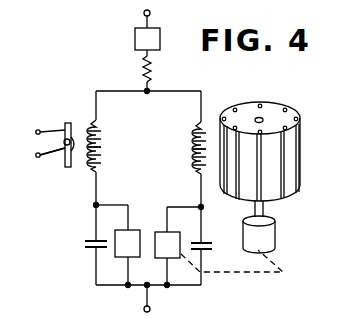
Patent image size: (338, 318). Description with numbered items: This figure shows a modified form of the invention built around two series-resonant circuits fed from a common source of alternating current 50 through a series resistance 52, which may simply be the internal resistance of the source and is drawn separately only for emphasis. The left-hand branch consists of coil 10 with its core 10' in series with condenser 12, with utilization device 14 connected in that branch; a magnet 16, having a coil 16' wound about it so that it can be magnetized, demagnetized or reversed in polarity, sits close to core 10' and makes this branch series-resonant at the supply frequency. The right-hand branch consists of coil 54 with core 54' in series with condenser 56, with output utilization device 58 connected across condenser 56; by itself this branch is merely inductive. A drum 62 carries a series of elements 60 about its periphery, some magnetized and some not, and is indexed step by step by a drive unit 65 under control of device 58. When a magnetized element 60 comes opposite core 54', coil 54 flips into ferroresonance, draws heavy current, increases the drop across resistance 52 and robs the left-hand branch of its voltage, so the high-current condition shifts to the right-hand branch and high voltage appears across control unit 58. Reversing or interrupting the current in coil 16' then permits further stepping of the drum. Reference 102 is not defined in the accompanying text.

The coil 10 is at (112, 141).
The core 10' is at (115, 146).
The condenser 12 is at (85, 244).
The utilization device 14 is at (118, 258).
The magnet 16 is at (54, 143).
The coil 16' is at (35, 146).
The source of alternating current 50 is at (135, 41).
The series resistance 52 is at (151, 74).
The coil 54 is at (183, 143).
The core 54' is at (179, 154).
The condenser 56 is at (208, 246).
The output utilization device 58 is at (160, 232).
The magnet 60 is at (258, 105).
The drum 62 is at (284, 119).
The drive unit 65 is at (277, 230).
The circuit 102 is at (56, 313).